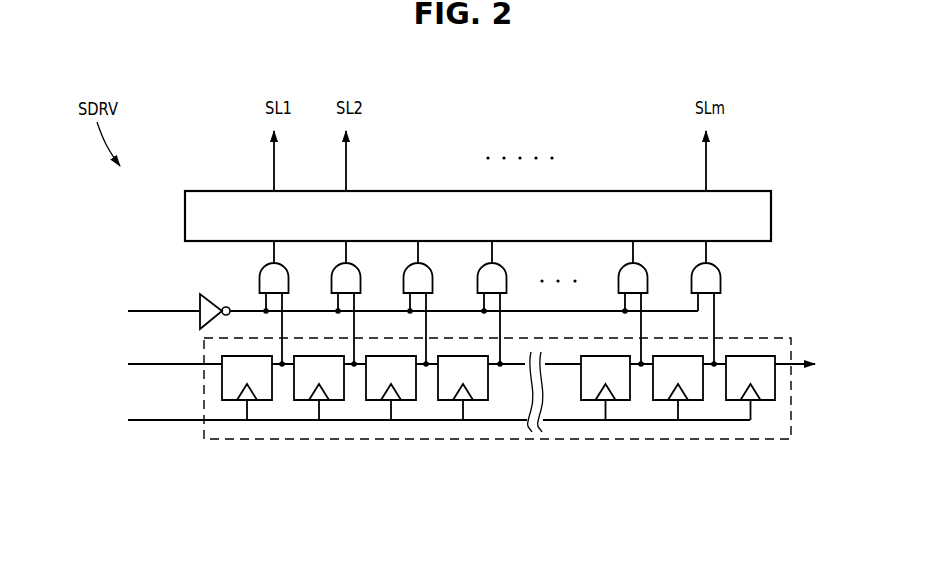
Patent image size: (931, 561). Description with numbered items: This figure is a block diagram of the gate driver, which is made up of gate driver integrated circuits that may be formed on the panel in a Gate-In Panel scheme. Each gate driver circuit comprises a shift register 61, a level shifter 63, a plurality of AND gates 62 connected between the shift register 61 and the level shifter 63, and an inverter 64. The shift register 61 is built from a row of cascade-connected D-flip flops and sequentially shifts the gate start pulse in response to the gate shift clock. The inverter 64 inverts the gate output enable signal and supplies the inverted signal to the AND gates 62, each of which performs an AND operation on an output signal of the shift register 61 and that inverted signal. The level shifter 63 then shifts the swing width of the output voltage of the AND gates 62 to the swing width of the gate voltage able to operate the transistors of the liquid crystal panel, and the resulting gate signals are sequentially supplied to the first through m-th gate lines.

The shift register 61 is at (792, 388).
The AND gates 62 is at (721, 283).
The level shifter 63 is at (464, 224).
The inverter 64 is at (199, 298).